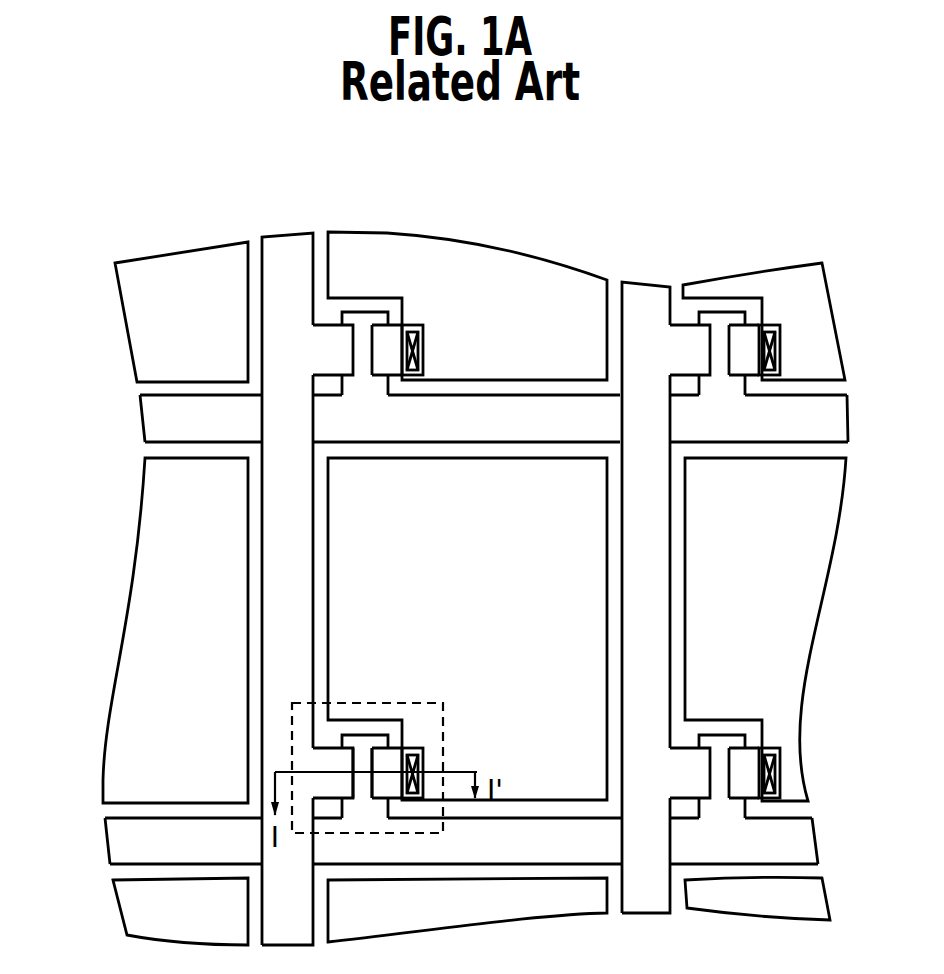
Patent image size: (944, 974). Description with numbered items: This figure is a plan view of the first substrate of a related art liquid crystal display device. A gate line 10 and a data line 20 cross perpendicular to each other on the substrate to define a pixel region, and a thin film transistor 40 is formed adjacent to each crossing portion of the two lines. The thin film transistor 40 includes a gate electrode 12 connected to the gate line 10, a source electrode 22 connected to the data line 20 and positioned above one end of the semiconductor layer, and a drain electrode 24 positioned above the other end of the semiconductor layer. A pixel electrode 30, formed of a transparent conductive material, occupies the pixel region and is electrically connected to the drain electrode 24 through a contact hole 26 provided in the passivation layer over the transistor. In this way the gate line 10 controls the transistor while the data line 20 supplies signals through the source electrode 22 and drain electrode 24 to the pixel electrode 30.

The gate line 10 is at (120, 842).
The gate electrode 12 is at (362, 787).
The data line 20 is at (280, 588).
The source electrode 22 is at (333, 755).
The drain electrode 24 is at (380, 790).
The contact hole 26 is at (412, 752).
The pixel electrode 30 is at (340, 525).
The thin film transistor 40 is at (292, 735).